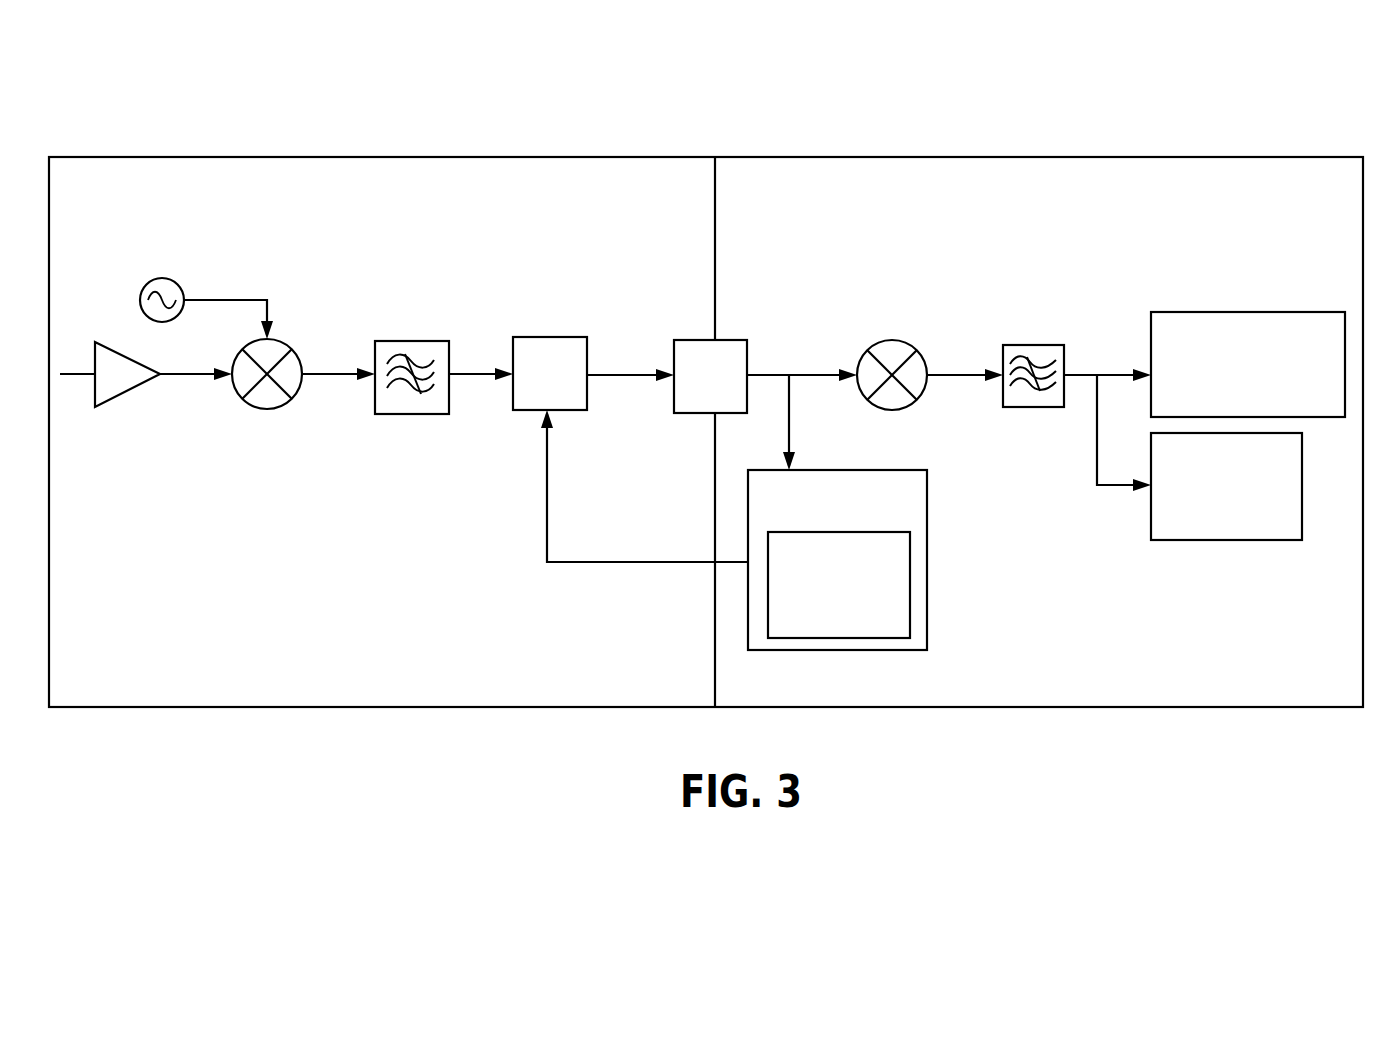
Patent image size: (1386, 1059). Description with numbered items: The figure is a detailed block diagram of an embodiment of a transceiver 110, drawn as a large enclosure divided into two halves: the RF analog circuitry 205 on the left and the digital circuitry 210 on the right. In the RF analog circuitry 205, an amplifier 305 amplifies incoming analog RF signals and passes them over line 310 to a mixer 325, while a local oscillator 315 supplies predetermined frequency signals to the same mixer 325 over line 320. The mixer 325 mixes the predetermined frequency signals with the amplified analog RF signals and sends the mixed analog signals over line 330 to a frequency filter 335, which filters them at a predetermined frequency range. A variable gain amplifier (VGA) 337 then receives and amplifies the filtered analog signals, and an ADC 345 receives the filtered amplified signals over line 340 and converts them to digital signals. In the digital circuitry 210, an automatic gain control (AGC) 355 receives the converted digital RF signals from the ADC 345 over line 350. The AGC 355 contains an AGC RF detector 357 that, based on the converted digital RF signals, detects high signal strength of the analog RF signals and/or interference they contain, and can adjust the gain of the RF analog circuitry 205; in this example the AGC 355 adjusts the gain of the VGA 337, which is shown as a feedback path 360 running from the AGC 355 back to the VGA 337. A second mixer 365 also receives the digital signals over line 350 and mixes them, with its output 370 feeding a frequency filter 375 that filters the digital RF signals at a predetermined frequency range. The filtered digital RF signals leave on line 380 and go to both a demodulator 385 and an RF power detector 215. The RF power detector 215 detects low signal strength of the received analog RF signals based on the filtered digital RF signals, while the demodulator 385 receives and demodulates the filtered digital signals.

The transceiver 110 is at (168, 97).
The RF analog circuitry 205 is at (553, 207).
The digital circuitry 210 is at (1099, 207).
The RF power detector 215 is at (1203, 531).
The amplifier 305 is at (110, 398).
The line 310 is at (173, 374).
The local oscillator 315 is at (162, 278).
The line 320 is at (220, 300).
The mixer 325 is at (262, 411).
The line 330 is at (317, 372).
The frequency filter 335 is at (383, 341).
The variable gain amplifier (VGA) 337 is at (527, 400).
The line 340 is at (597, 375).
The ADC 345 is at (733, 405).
The line 350 is at (765, 375).
The automatic gain control (AGC) 355 is at (888, 511).
The AGC RF detector 357 is at (815, 631).
The gain control signal 360 is at (568, 562).
The mixer 365 is at (892, 340).
The digital mixed signal 370 is at (933, 377).
The frequency filter 375 is at (1030, 345).
The filtered digital signal 380 is at (1072, 375).
The demodulator 385 is at (1230, 393).